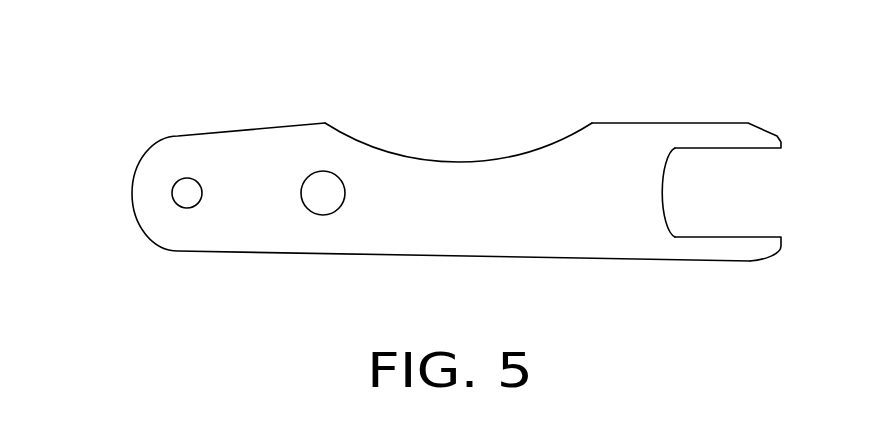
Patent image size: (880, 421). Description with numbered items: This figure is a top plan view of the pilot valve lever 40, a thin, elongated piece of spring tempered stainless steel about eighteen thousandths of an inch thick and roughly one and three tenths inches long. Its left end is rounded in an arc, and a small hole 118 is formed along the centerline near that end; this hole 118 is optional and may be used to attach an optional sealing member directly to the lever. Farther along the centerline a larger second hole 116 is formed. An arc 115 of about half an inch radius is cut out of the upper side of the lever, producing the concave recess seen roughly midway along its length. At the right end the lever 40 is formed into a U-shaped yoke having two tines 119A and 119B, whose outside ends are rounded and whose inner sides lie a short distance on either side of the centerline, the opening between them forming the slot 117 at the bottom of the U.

The pilot valve lever 40 is at (515, 226).
The arc 115 is at (493, 160).
The second hole 116 is at (308, 209).
The slot 117 is at (715, 192).
The hole 118 is at (175, 202).
The tine 119A is at (720, 253).
The tine 119B is at (731, 128).